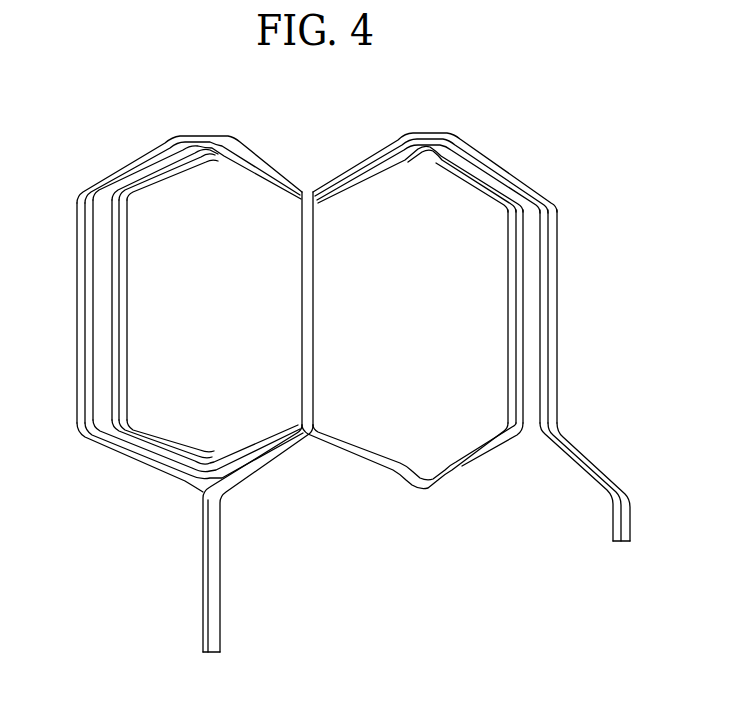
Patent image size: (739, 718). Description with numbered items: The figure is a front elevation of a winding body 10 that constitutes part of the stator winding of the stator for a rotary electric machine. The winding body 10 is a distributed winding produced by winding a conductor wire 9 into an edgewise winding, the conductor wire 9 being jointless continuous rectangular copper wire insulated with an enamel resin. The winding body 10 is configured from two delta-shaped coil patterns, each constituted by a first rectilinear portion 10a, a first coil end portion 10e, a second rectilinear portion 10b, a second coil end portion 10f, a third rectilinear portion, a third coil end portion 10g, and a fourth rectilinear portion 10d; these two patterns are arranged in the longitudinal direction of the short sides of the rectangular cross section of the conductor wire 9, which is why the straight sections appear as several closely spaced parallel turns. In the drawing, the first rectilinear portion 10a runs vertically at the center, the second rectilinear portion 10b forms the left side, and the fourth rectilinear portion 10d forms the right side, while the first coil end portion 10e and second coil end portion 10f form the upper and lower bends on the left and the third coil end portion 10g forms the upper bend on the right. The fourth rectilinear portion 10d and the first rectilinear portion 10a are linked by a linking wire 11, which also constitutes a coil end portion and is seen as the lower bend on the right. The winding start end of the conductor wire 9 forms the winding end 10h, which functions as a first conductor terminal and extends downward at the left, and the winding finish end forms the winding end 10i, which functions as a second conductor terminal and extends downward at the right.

The winding body 10 is at (61, 103).
The first rectilinear portion 10a is at (313, 367).
The second rectilinear portion 10b is at (113, 332).
The fourth rectilinear portion 10d is at (520, 356).
The first coil end portion 10e is at (165, 162).
The second coil end portion 10f is at (160, 447).
The third coil end portion 10g is at (507, 168).
The winding end 10h is at (218, 592).
The winding end 10i is at (613, 522).
The linking wire 11 is at (375, 457).
The conductor wire 9 is at (203, 548).